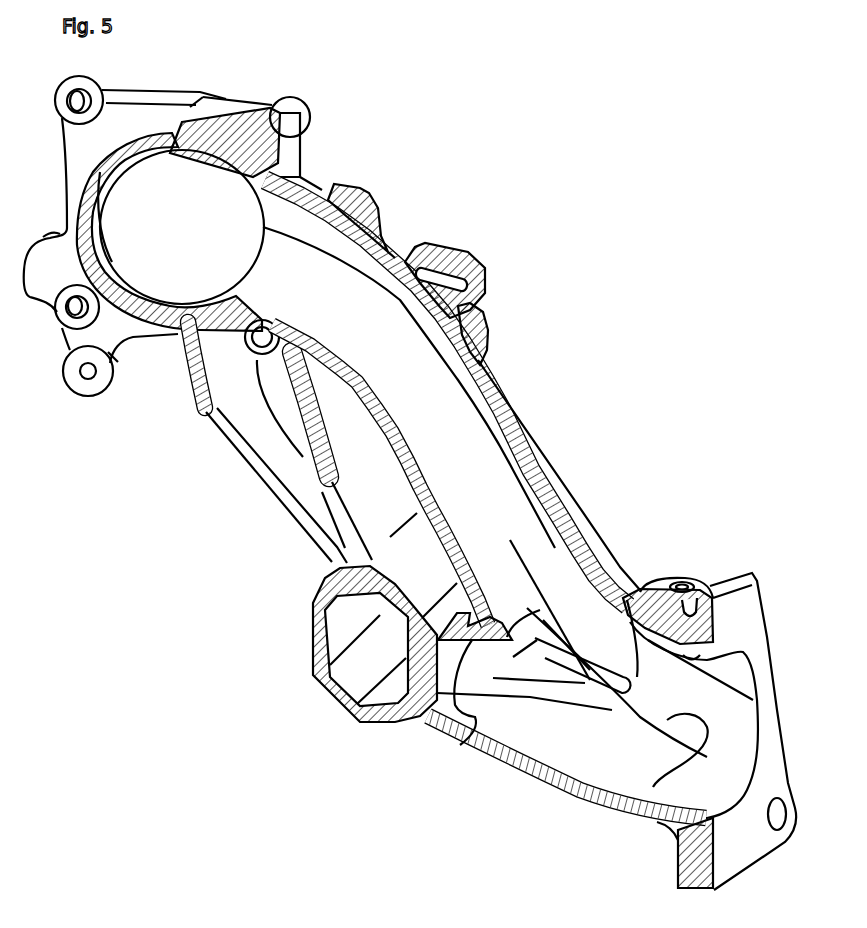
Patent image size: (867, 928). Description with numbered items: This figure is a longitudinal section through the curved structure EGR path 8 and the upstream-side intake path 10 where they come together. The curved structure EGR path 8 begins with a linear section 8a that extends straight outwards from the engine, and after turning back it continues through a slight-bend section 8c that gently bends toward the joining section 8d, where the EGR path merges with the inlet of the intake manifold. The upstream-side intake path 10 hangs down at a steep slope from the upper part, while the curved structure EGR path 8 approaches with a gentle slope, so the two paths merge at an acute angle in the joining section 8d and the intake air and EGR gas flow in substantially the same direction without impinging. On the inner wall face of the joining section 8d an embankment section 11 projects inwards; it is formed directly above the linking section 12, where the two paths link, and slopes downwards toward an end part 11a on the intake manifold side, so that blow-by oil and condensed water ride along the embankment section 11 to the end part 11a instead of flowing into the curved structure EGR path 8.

The curved structure EGR path 8 is at (467, 730).
The linear section 8a is at (363, 665).
The slight-bend section 8c is at (500, 732).
The joining section 8d is at (753, 727).
The upstream-side intake path 10 is at (500, 388).
The embankment section 11 is at (543, 632).
The end part 11a is at (621, 597).
The linking section 12 is at (437, 727).